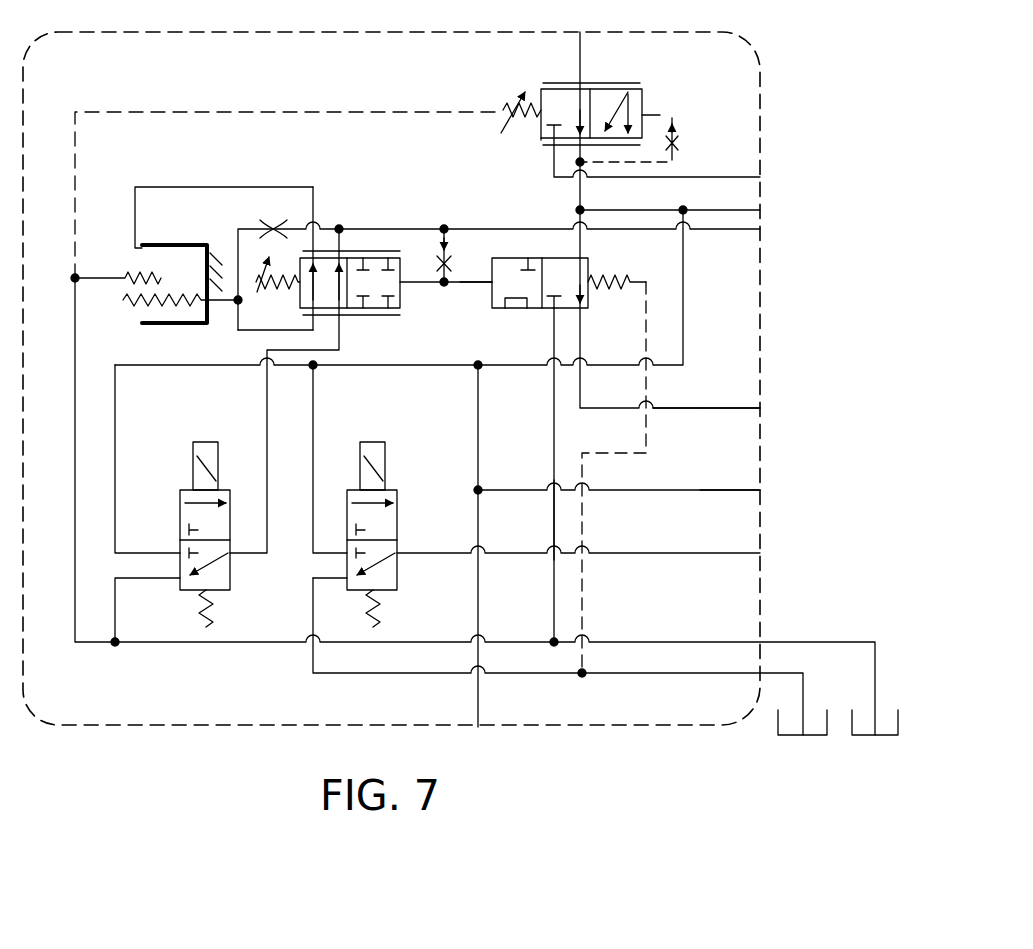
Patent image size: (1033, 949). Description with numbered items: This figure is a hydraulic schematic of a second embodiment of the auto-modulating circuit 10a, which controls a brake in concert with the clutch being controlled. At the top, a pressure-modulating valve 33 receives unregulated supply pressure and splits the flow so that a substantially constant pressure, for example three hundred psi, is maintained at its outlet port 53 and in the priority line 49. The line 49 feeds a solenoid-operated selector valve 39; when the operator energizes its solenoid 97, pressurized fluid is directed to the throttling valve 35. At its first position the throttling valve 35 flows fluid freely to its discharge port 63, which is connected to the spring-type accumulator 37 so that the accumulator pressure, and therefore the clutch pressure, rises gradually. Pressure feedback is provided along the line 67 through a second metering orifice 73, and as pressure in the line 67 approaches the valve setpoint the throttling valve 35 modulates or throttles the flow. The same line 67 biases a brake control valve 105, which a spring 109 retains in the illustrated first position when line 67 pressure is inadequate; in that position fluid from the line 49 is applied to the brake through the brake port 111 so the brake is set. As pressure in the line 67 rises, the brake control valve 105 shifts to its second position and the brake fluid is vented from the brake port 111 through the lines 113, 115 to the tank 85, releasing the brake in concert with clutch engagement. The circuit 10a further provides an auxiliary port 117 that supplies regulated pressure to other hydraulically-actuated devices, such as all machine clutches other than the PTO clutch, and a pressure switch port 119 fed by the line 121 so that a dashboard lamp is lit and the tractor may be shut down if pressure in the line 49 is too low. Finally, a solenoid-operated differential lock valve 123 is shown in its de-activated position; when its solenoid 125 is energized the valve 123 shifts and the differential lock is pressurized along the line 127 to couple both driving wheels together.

The auto-modulating circuit 10a is at (743, 36).
The pressure-modulating valve 33 is at (643, 95).
The throttling valve 35 is at (402, 295).
The spring-type accumulator 37 is at (187, 323).
The selector valve 39 is at (180, 505).
The line 49 is at (578, 196).
The outlet port 53 is at (557, 152).
The discharge port 63 is at (362, 224).
The line 67 is at (472, 280).
The second metering orifice 73 is at (442, 248).
The tank 85 is at (865, 736).
The solenoid 97 is at (210, 442).
The brake control valve 105 is at (507, 312).
The spring 109 is at (607, 270).
The brake port 111 is at (762, 405).
The line 113 is at (703, 410).
The line 115 is at (555, 525).
The auxiliary port 117 is at (762, 210).
The pressure switch port 119 is at (762, 488).
The line 121 is at (710, 490).
The differential lock valve 123 is at (400, 517).
The solenoid 125 is at (362, 442).
The line 127 is at (722, 553).